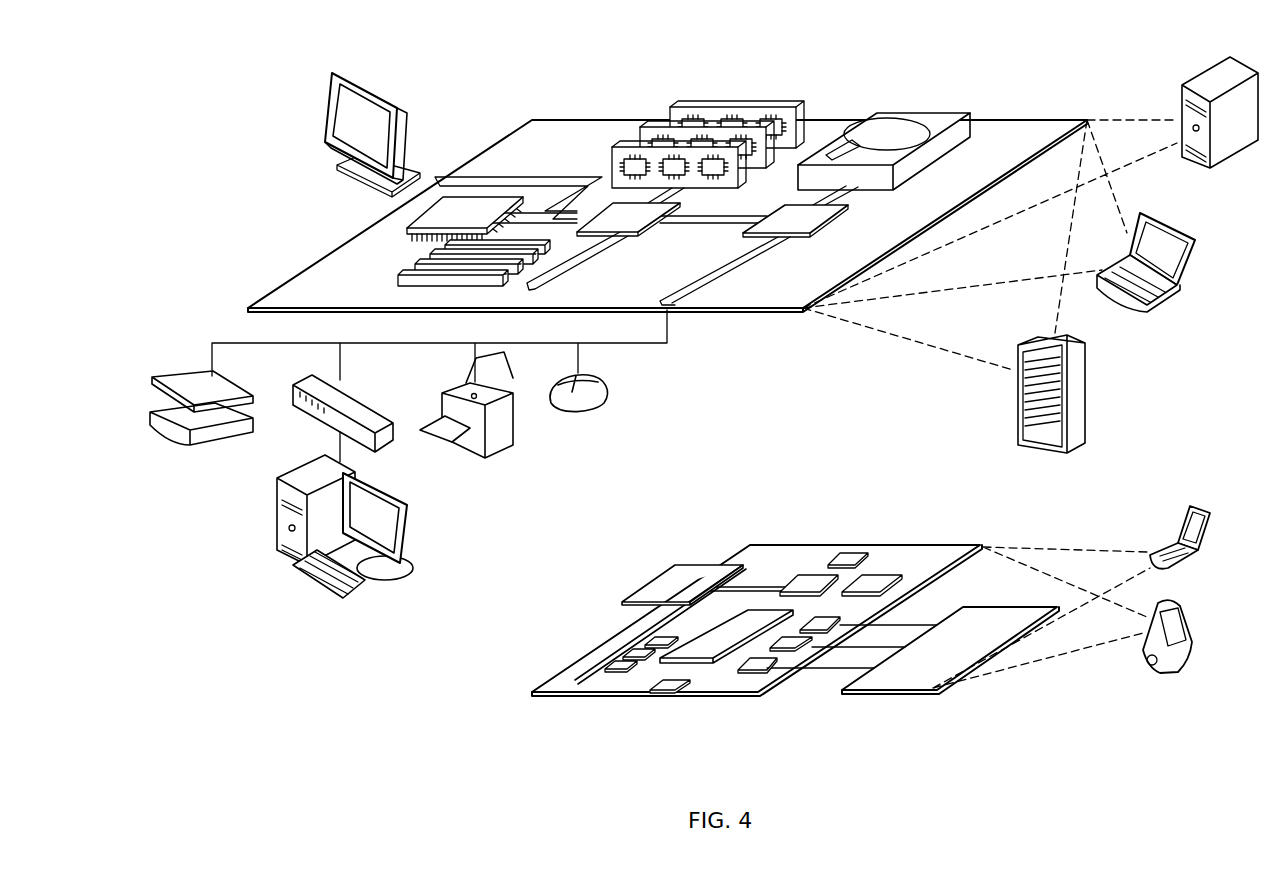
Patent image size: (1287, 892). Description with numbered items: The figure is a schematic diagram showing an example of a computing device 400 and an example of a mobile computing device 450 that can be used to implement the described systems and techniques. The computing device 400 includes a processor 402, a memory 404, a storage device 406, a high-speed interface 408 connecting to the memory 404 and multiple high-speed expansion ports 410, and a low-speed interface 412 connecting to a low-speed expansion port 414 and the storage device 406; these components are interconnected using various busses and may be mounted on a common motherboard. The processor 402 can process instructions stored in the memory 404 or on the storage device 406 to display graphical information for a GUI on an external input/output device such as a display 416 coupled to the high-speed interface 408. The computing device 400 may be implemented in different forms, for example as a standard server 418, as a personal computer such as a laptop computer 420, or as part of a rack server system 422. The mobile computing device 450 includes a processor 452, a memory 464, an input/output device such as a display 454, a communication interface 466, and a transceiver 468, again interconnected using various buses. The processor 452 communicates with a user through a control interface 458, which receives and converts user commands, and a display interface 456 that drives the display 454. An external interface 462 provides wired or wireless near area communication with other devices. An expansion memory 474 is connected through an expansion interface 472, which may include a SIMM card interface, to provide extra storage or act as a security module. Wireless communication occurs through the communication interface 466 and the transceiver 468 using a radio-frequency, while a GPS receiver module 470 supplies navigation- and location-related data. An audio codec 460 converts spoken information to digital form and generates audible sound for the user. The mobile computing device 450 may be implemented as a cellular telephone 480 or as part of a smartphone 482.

The computing device 400 is at (510, 84).
The processor 402 is at (405, 220).
The memory 404 is at (728, 105).
The storage device 406 is at (929, 114).
The high-speed interface 408 is at (630, 235).
The high-speed expansion ports 410 is at (286, 280).
The low-speed interface 412 is at (823, 223).
The low-speed expansion port 414 is at (718, 280).
The display 416 is at (331, 78).
The standard server 418 is at (1186, 82).
The laptop computer 420 is at (1195, 243).
The rack server system 422 is at (1087, 402).
The mobile computing device 450 is at (713, 493).
The processor 452 is at (740, 627).
The display 454 is at (887, 692).
The display interface 456 is at (752, 672).
The control interface 458 is at (785, 650).
The audio codec 460 is at (815, 632).
The external interface 462 is at (657, 697).
The memory 464 is at (605, 666).
The communication interface 466 is at (806, 575).
The transceiver 468 is at (876, 575).
The GPS receiver module 470 is at (855, 550).
The expansion interface 472 is at (742, 560).
The expansion memory 474 is at (655, 580).
The cellular telephone 480 is at (1200, 510).
The smartphone 482 is at (1180, 615).